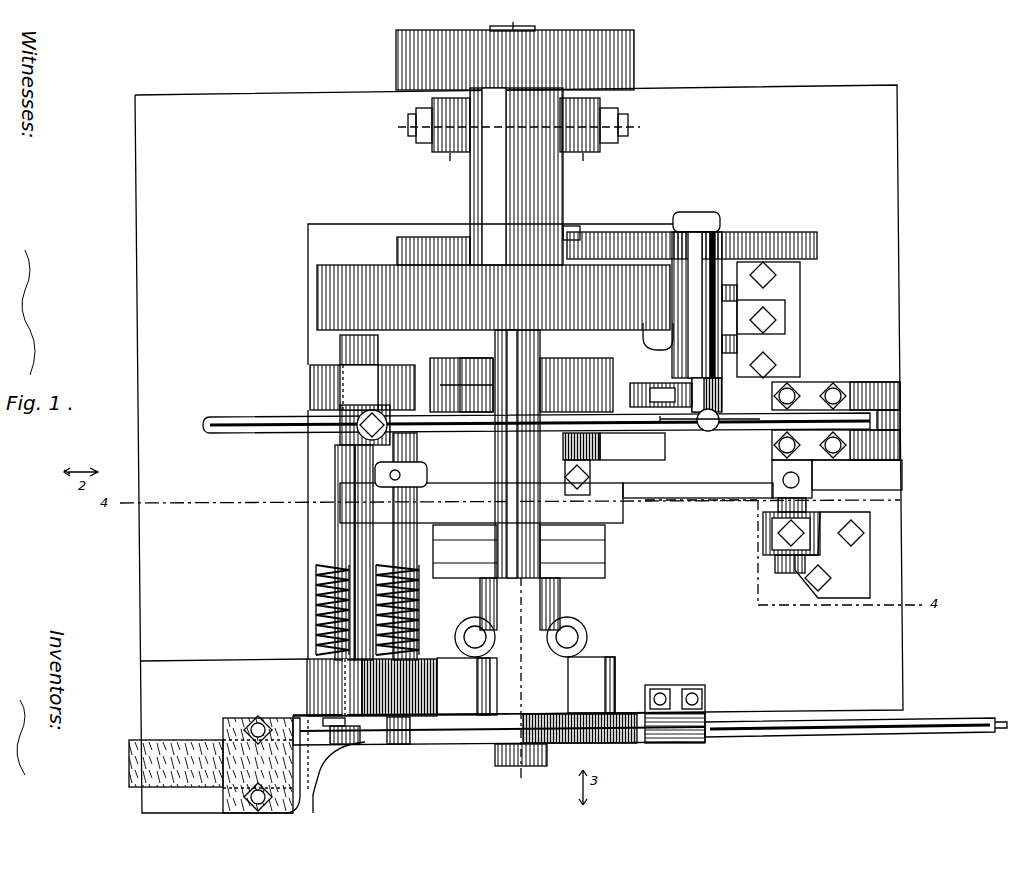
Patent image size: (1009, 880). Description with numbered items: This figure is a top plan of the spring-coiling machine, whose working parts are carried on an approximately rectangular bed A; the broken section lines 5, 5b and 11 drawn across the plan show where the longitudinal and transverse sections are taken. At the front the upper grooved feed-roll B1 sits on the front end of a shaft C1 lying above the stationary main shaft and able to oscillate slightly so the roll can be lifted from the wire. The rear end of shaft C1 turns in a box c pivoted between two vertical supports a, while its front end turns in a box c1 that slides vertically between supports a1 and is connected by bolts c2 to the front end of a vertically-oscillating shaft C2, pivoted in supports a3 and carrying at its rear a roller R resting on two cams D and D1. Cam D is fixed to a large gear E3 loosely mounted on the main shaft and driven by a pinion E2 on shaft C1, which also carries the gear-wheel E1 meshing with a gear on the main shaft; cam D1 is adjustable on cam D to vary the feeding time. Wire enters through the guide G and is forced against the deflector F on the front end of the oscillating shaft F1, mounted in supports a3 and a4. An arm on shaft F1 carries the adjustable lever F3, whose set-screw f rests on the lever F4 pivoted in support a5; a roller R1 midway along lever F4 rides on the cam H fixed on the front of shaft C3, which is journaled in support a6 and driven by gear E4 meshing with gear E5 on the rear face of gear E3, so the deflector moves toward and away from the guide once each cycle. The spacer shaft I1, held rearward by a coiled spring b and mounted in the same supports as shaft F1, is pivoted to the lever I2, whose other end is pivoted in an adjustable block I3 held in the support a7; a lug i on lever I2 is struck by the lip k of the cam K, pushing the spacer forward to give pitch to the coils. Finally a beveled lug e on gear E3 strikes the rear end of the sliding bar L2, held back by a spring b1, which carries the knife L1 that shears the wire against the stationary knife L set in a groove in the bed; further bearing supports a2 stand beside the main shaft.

The bed A is at (519, 449).
The gear-wheel E1 is at (634, 52).
The section line 5 is at (512, 19).
The section line 5b is at (520, 783).
The box c is at (563, 195).
The section line 11 is at (517, 125).
The vertical supports a is at (517, 167).
The gear E5 is at (420, 238).
The large gear E3 is at (655, 238).
The pinion E2 is at (605, 260).
The gear-wheel E4 is at (760, 235).
The shaft C3 is at (800, 293).
The support a6 is at (785, 320).
The beveled lug e is at (644, 338).
The cam D is at (445, 362).
The roller R is at (490, 364).
The cam D1 is at (466, 398).
The support a4 is at (310, 388).
The roller R1 is at (725, 392).
The cam H is at (790, 392).
The support a5 is at (900, 390).
The lever F3 is at (242, 416).
The cam K is at (360, 459).
The set-screw f is at (708, 431).
The lip k is at (620, 452).
The inclined lug i is at (585, 458).
The shaft C1 is at (545, 505).
The shaft I1 is at (393, 492).
The shaft F1 is at (355, 520).
The sliding bar L2 is at (335, 540).
The spring b is at (330, 560).
The spring b1 is at (330, 636).
The lever I2 is at (698, 502).
The adjustable block I3 is at (812, 485).
The oscillating lever F4 is at (776, 425).
The support a7 is at (820, 525).
The bearing blocks a2 is at (519, 577).
The bolts c2 is at (602, 636).
The box c1 is at (521, 674).
The supports a1 is at (526, 686).
The supports a3 is at (345, 687).
The upper feed-roll B1 is at (487, 745).
The vertically-oscillating shaft C2 is at (401, 745).
The deflector F is at (340, 738).
The guide G is at (800, 735).
The stationary knife L is at (127, 768).
The knife L1 is at (327, 760).